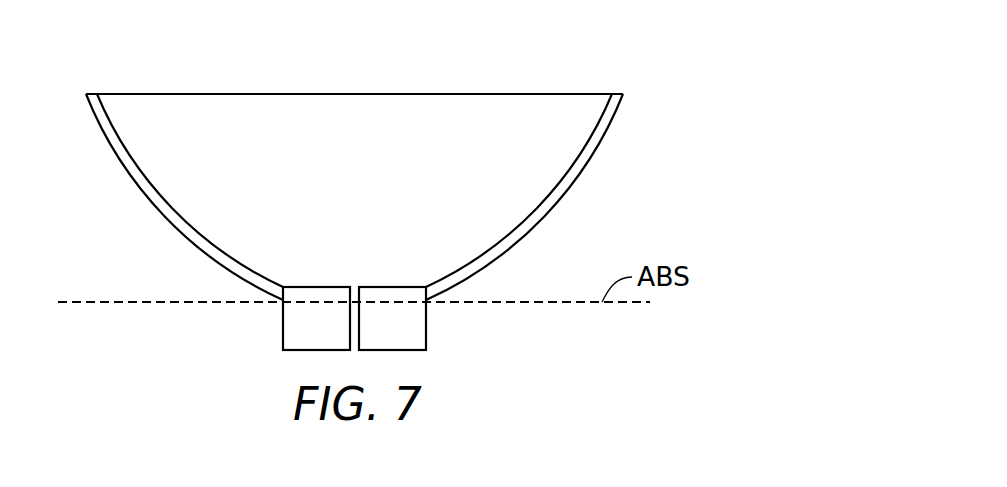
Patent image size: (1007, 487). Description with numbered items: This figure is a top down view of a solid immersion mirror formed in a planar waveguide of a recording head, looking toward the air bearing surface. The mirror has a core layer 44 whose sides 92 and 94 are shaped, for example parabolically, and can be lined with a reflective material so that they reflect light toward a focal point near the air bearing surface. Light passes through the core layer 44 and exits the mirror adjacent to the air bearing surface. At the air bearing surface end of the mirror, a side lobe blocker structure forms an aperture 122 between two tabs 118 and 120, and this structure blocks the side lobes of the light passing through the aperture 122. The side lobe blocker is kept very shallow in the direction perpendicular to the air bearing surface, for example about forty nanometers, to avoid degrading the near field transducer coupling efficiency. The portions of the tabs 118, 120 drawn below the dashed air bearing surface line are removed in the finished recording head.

The core layer 44 is at (475, 107).
The side 92 is at (147, 193).
The side 94 is at (545, 199).
The tab 118 is at (295, 322).
The tab 120 is at (413, 326).
The aperture 122 is at (352, 292).